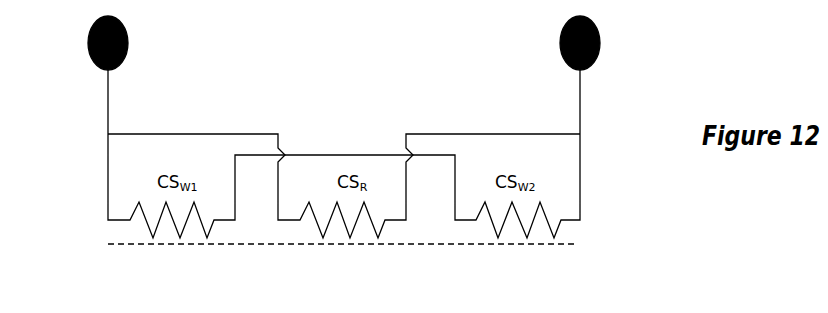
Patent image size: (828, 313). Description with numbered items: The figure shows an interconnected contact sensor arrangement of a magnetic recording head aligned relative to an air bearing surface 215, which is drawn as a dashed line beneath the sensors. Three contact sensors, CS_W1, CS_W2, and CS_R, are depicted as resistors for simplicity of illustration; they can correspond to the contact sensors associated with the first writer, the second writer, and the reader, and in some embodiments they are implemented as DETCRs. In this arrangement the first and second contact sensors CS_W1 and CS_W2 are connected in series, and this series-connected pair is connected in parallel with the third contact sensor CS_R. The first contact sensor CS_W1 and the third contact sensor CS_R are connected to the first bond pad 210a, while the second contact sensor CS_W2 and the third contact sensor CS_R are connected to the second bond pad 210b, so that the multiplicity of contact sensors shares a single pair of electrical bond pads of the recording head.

The first bond pad 210a is at (88, 49).
The second bond pad 210b is at (600, 40).
The air bearing surface 215 is at (434, 246).